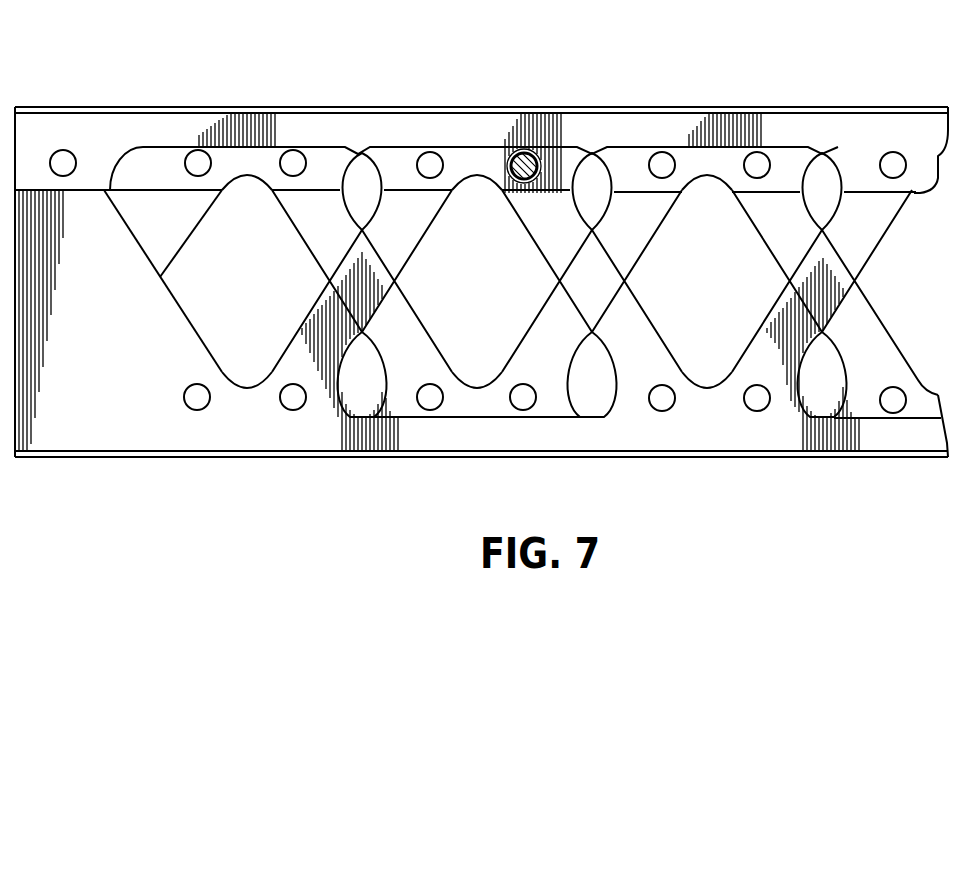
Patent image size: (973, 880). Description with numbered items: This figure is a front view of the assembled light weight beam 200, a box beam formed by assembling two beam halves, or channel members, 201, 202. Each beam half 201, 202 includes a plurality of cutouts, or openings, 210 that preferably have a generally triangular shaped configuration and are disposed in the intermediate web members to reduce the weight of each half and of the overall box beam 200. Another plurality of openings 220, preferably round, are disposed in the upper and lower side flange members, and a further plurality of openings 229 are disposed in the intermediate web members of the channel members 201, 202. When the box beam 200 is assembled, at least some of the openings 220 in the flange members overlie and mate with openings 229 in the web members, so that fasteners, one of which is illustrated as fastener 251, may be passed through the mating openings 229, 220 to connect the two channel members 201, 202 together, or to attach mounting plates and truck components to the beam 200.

The light weight beam 200 is at (694, 106).
The first beam half 201 is at (172, 107).
The second beam half 202 is at (127, 440).
The cutouts or openings 210 is at (178, 309).
The openings 220 is at (63, 150).
The openings 229 is at (517, 153).
The fastener 251 is at (531, 150).